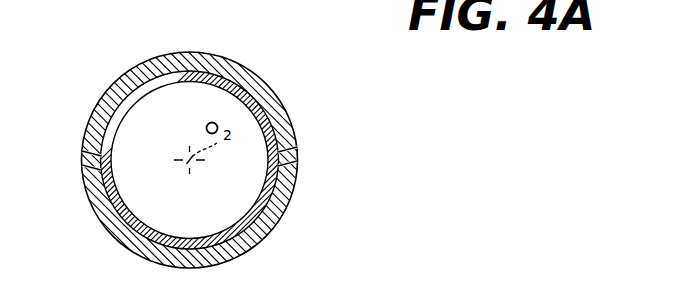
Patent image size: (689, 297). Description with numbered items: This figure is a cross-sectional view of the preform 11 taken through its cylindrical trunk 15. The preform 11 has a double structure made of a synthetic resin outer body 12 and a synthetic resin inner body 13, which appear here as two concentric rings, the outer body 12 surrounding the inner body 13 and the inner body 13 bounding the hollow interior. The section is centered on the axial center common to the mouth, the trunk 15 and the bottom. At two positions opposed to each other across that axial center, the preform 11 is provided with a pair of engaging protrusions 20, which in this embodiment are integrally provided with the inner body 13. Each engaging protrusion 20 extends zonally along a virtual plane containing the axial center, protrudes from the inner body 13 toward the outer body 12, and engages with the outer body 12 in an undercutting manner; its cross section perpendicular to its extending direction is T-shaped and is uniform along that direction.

The preform 11 is at (304, 89).
The outer body 12 is at (133, 72).
The inner body 13 is at (148, 229).
The trunk 15 is at (235, 63).
The engaging protrusion 20 is at (92, 160).